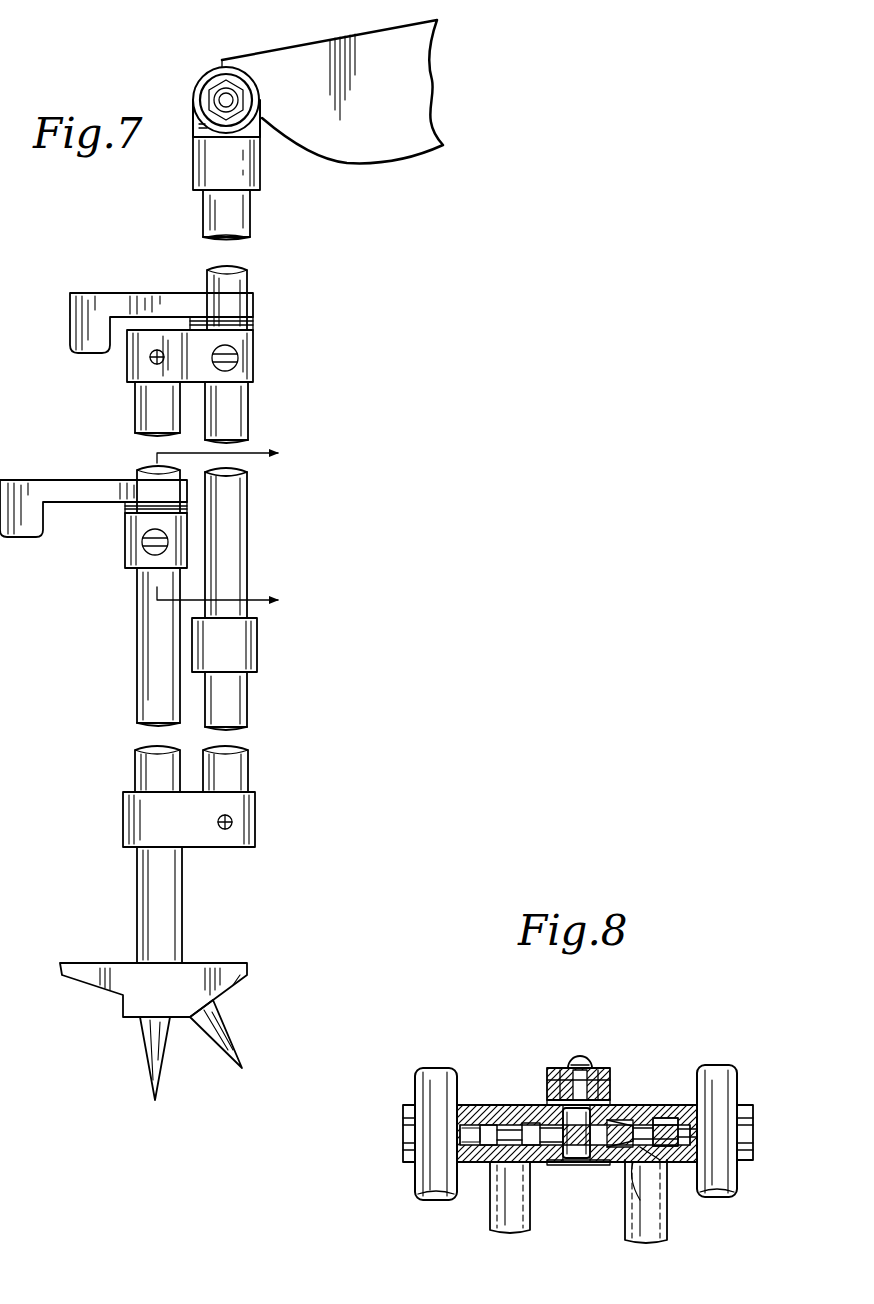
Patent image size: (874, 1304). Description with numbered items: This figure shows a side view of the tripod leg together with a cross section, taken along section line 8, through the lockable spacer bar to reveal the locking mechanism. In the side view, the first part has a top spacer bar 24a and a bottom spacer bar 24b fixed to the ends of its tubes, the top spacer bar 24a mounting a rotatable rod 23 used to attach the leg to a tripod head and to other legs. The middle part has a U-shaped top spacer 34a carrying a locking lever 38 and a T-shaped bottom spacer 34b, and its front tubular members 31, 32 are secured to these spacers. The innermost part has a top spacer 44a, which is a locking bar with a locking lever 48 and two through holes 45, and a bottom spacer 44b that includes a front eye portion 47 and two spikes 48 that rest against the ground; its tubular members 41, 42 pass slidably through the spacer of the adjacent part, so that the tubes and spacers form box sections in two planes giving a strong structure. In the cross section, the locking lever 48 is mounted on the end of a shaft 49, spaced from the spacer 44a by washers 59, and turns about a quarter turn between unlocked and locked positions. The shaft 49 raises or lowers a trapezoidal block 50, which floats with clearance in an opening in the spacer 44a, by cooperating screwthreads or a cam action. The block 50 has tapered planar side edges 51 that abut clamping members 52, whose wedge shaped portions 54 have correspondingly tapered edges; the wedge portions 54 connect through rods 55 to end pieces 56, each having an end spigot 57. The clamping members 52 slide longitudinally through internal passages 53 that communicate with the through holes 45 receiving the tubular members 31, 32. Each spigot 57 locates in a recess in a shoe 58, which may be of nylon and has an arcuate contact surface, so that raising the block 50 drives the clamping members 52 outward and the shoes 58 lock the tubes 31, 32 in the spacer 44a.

In FIG. 7, the rotatable rod 23 is at (248, 78).
In FIG. 7, the top spacer bar 24a is at (260, 180).
In FIG. 7, the locking lever 38 is at (170, 293).
In FIG. 7, the top spacer 34a is at (255, 340).
In FIG. 7, the section line 8- 8 is at (234, 533).
In FIG. 7, the locking lever 48 is at (95, 480).
In FIG. 8, the locking lever 48 is at (585, 1060).
In FIG. 7, the top spacer 44a is at (125, 545).
In FIG. 7, the bottom spacer bar 24b is at (257, 650).
In FIG. 7, the bottom spacer 34b is at (255, 825).
In FIG. 7, the bottom spacer 44b is at (248, 977).
In FIG. 7, the front eye portion 47 is at (73, 1014).
In FIG. 8, the tubular member 31 is at (415, 1088).
In FIG. 8, the tubular member 32 is at (740, 1180).
In FIG. 8, the through holes 45 is at (412, 1165).
In FIG. 8, the tubular member 41 is at (530, 1210).
In FIG. 8, the tubular member 42 is at (625, 1200).
In FIG. 8, the shaft 49 is at (618, 1100).
In FIG. 8, the trapezoidal block 50 is at (612, 1160).
In FIG. 8, the tapered planar side edges 51 is at (638, 1160).
In FIG. 8, the clamping members 52 is at (515, 1118).
In FIG. 8, the internal passages 53 is at (688, 1127).
In FIG. 8, the wedge shaped portions 54 is at (533, 1133).
In FIG. 8, the rods 55 is at (647, 1125).
In FIG. 8, the end pieces 56 is at (673, 1150).
In FIG. 8, the end spigot 57 is at (690, 1132).
In FIG. 8, the shoe 58 is at (465, 1107).
In FIG. 8, the washers 59 is at (617, 1100).